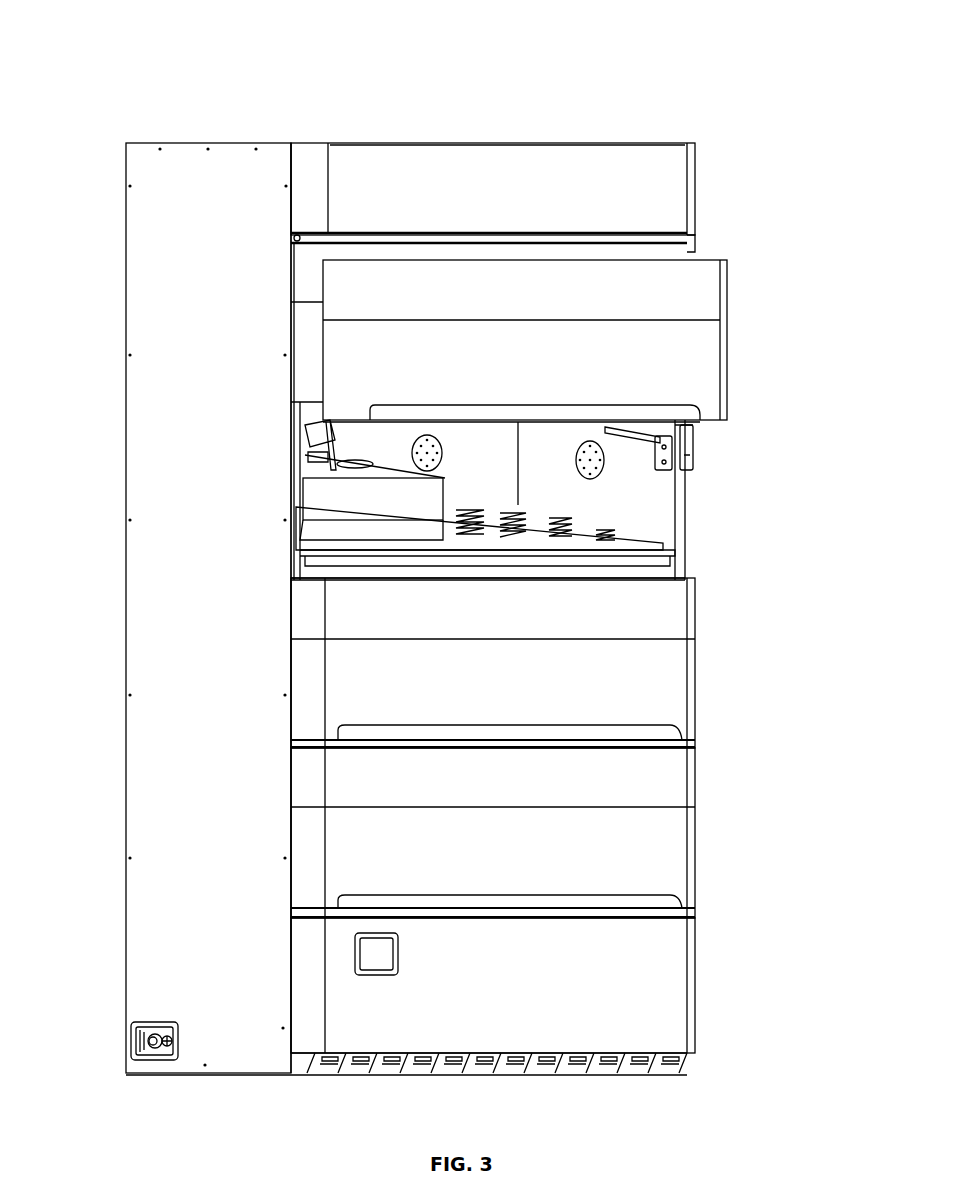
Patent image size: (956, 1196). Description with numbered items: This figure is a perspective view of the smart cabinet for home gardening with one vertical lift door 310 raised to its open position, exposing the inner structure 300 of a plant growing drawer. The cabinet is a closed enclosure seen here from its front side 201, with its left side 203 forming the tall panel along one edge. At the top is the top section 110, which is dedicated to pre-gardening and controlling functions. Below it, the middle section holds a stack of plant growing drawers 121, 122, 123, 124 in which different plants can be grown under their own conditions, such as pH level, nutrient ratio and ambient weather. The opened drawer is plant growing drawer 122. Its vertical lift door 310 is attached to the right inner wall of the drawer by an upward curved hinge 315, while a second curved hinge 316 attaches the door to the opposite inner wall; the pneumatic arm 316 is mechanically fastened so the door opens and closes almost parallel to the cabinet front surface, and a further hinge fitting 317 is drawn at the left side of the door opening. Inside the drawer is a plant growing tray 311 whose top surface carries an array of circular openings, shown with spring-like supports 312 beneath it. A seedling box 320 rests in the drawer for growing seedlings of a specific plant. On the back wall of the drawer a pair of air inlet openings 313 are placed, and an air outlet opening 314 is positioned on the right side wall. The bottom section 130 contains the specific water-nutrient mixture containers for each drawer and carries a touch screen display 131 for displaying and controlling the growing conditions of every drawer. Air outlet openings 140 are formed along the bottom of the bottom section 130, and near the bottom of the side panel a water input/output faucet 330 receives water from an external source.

The inner structure 300 is at (435, 563).
The front side 201 is at (440, 145).
The left side 203 is at (143, 240).
The top section 110 is at (697, 183).
The plant growing drawer 121 is at (697, 252).
The vertical lift door 310 is at (729, 285).
The plant growing drawer 122 is at (687, 508).
The plant growing tray 311 is at (575, 522).
The springs 312 is at (462, 508).
The air inlet openings 313 is at (445, 448).
The air outlet opening 314 is at (572, 452).
The upward curved hinge 315 is at (695, 440).
The second curved hinge 316 is at (628, 434).
The hinge 317 is at (337, 447).
The seedling box 320 is at (405, 512).
The plant growing drawer 123 is at (697, 630).
The plant growing drawer 124 is at (697, 828).
The bottom section 130 is at (697, 980).
The touch screen display 131 is at (399, 950).
The air outlet openings 140 is at (582, 1073).
The water input/output faucet 330 is at (131, 1040).